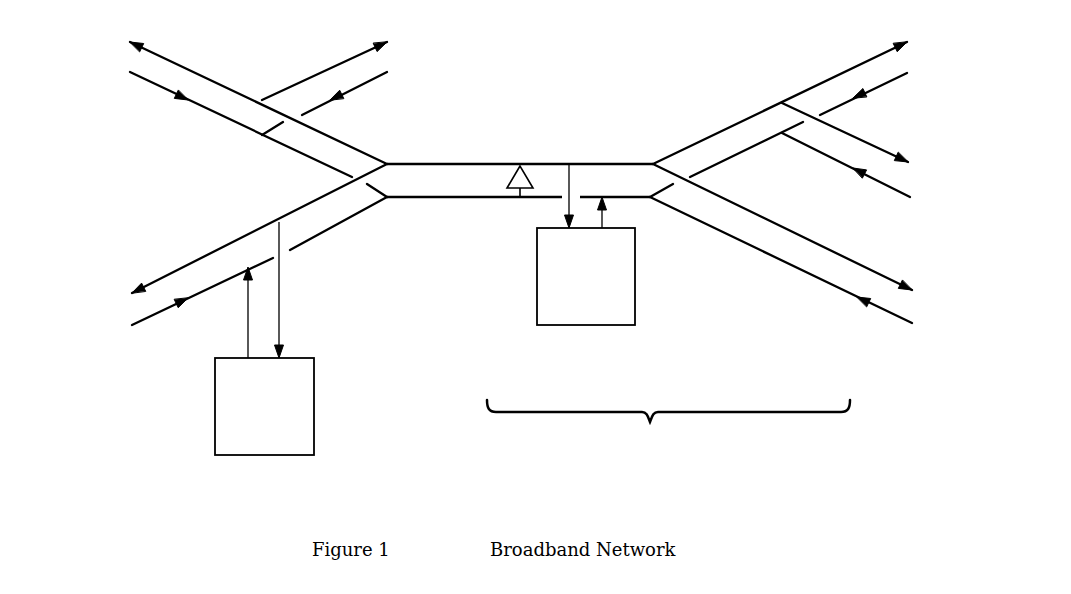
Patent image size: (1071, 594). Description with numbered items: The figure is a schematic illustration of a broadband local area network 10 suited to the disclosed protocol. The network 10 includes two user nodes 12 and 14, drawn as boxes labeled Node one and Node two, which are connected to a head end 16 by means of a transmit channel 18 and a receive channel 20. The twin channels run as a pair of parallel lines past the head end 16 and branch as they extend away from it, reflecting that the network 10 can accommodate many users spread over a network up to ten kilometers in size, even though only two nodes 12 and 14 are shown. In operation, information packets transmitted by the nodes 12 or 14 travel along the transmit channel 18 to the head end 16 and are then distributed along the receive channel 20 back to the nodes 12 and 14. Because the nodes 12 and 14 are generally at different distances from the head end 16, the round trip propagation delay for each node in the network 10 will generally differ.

The broadband local area network 10 is at (521, 246).
The user node 12 is at (314, 436).
The user node 14 is at (615, 325).
The head end 16 is at (528, 180).
The transmit channel 18 is at (497, 197).
The receive channel 20 is at (432, 164).